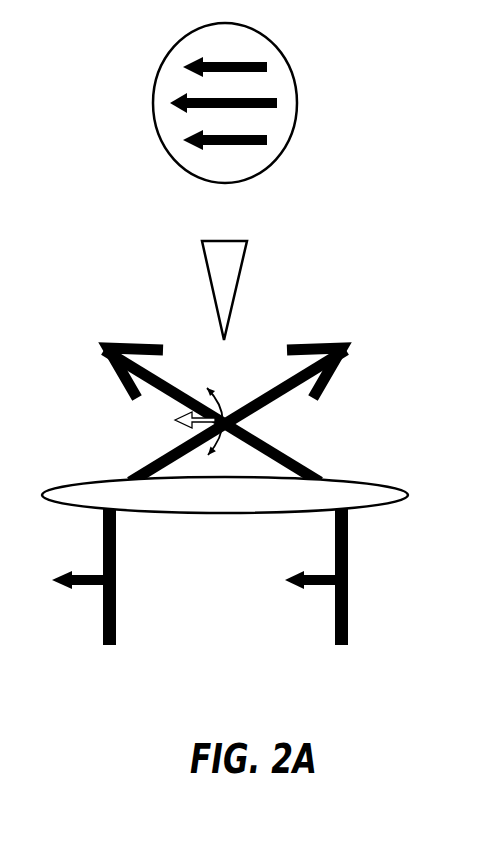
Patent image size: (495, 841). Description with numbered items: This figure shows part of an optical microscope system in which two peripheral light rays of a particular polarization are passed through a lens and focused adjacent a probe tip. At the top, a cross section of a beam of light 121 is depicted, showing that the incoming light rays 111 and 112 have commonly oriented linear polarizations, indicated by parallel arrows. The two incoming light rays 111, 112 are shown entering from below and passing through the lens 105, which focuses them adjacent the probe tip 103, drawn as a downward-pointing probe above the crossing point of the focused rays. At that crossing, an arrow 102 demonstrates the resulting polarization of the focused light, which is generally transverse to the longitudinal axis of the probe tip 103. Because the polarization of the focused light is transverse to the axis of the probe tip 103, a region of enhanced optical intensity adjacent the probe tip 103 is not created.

The beam of light 121 is at (294, 94).
The probe tip 103 is at (236, 275).
The arrow 102 is at (175, 420).
The lens 105 is at (366, 483).
The incoming light ray 111 is at (116, 613).
The incoming light ray 112 is at (348, 613).